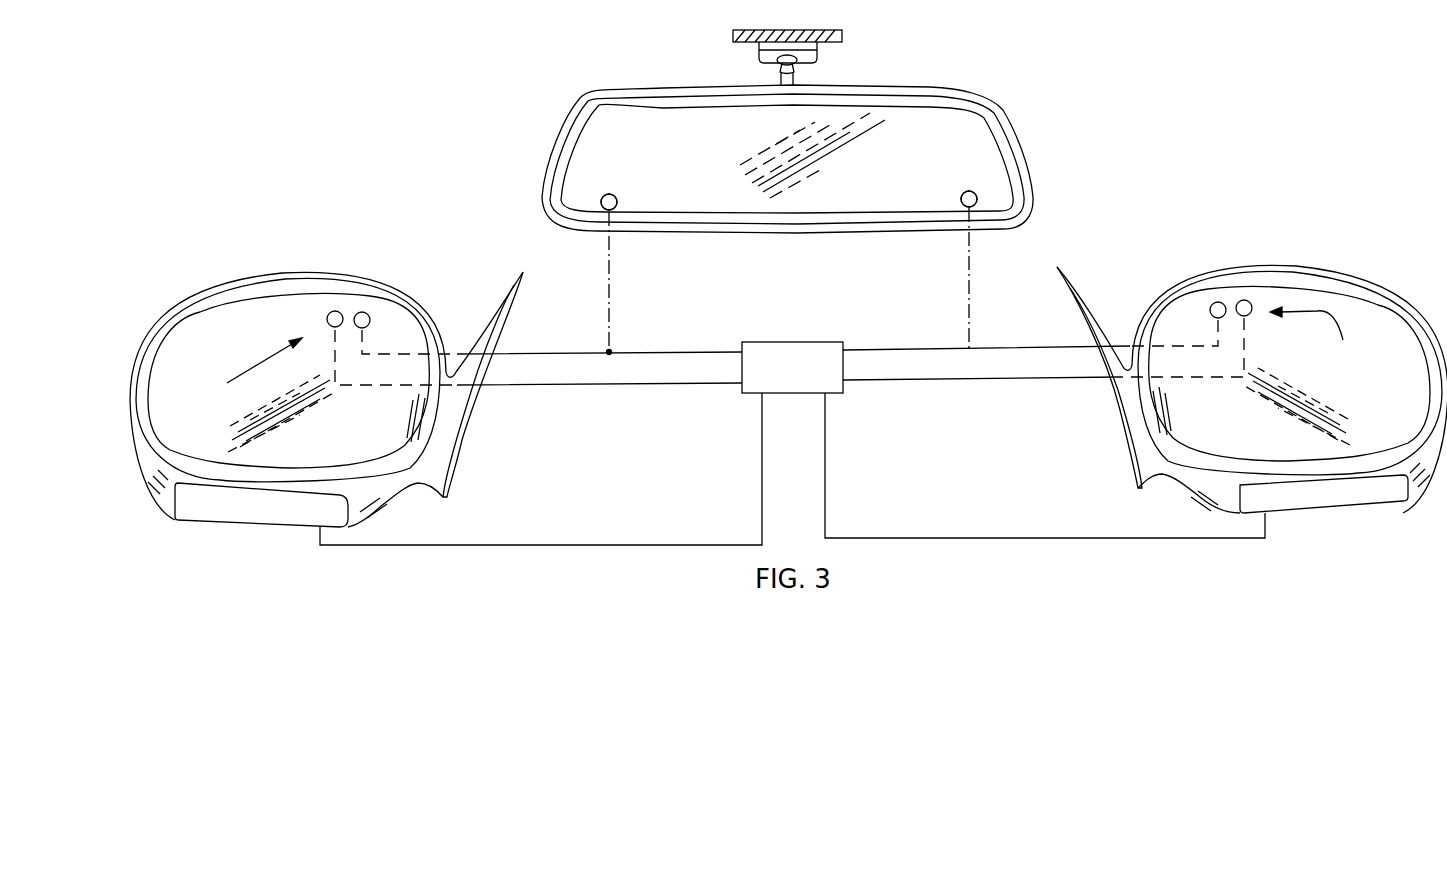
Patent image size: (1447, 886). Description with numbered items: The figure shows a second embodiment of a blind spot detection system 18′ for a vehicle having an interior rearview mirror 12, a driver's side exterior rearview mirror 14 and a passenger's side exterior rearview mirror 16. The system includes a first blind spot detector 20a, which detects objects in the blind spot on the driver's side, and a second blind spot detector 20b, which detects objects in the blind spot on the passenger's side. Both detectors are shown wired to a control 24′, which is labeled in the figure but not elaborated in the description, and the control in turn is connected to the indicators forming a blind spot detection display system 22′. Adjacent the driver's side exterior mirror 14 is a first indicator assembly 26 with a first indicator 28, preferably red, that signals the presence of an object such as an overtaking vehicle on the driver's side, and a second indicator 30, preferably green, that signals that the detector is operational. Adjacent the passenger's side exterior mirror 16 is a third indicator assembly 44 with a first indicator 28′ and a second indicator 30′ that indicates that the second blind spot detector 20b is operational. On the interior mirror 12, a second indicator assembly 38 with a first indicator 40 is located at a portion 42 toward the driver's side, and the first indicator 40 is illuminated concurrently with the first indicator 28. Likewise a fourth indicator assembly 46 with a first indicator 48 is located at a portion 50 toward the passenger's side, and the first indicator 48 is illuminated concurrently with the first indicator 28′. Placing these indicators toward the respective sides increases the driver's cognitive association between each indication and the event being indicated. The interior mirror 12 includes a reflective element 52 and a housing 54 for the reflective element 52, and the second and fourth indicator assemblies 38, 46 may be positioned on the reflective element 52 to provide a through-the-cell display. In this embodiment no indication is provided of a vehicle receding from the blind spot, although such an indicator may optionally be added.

The interior rearview mirror 12 is at (788, 131).
The driver's side exterior rearview mirror 14 is at (326, 403).
The passenger's side exterior rearview mirror 16 is at (1252, 379).
The blind spot detection system 18′ is at (800, 497).
The first blind spot detector 20a is at (236, 522).
The second blind spot detector 20b is at (1355, 513).
The blind spot detection display system 22′ is at (802, 315).
The control 24′ is at (837, 397).
The first indicator assembly 26 is at (247, 372).
The first indicator 28 is at (367, 312).
The second indicator 30 is at (330, 313).
The first indicator 28′ is at (1212, 302).
The second indicator 30′ is at (1248, 300).
The second indicator assembly 38 is at (624, 187).
The first indicator 40 is at (617, 200).
The portion of interior mirror 42 is at (544, 193).
The third indicator assembly 44 is at (1318, 335).
The fourth indicator assembly 46 is at (957, 189).
The first indicator 48 is at (958, 197).
The portion of interior mirror 50 is at (1040, 192).
The reflective element 52 is at (934, 117).
The housing 54 is at (858, 84).